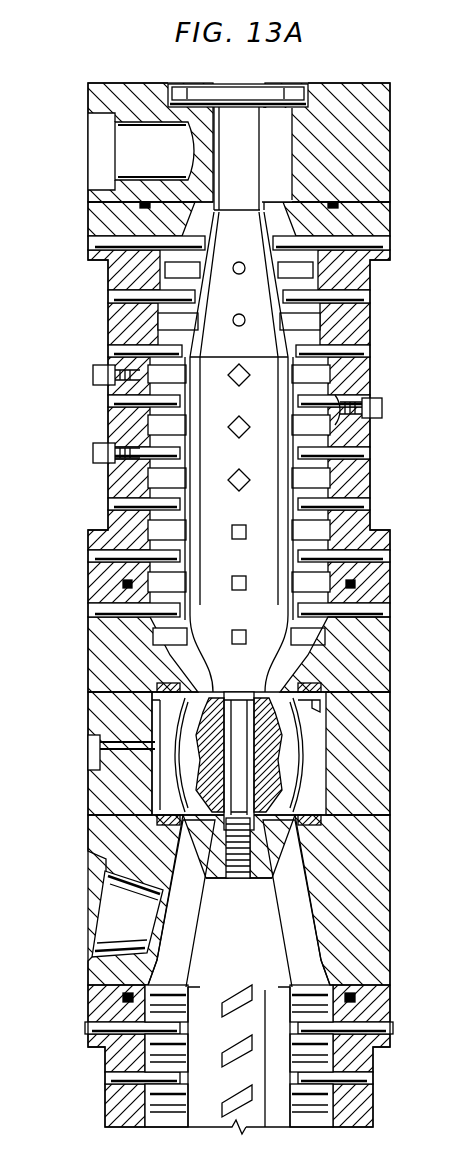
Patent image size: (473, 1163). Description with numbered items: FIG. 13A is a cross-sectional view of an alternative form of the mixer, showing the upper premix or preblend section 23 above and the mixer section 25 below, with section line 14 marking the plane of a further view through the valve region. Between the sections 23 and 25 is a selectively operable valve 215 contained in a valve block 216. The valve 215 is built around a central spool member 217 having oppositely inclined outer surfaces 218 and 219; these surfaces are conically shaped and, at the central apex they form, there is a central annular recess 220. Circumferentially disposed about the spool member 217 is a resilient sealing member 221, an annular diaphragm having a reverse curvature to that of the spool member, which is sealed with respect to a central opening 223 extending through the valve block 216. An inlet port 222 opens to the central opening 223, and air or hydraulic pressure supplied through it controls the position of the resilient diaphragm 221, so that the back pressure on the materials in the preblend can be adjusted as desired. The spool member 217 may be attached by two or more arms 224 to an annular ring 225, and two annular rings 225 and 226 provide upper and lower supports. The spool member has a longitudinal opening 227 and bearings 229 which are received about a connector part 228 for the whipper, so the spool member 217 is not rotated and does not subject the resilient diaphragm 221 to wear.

The premix section 23 is at (78, 492).
The mixer section 25 is at (398, 1083).
The FIG. 14 section line 14 is at (420, 752).
The selectively operable valve 215 is at (325, 690).
The valve block 216 is at (330, 703).
The central spool member 217 is at (205, 719).
The inclined outer surface 218 is at (278, 718).
The inclined outer surface 219 is at (300, 790).
The central annular recess 220 is at (285, 752).
The resilient sealing member 221 is at (183, 760).
The inlet port 222 is at (100, 745).
The central opening 223 is at (160, 818).
The arms 224 is at (165, 688).
The annular ring 225 is at (195, 712).
The annular ring 226 is at (172, 840).
The longitudinal opening 227 is at (132, 902).
The connector part 228 is at (262, 842).
The bearings 229 is at (325, 822).